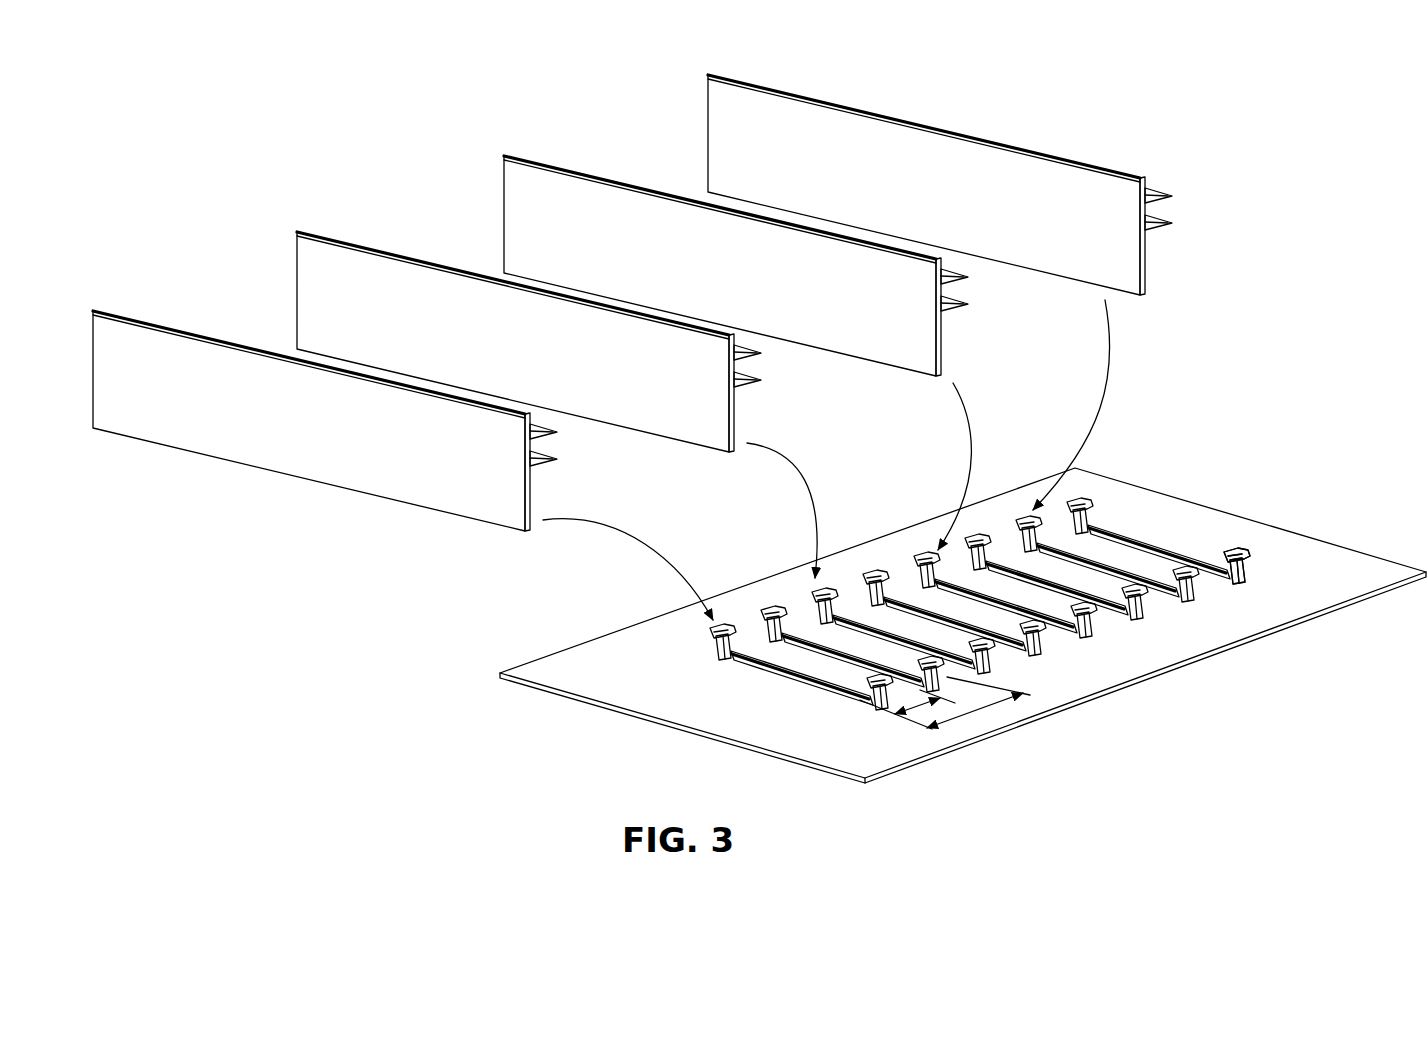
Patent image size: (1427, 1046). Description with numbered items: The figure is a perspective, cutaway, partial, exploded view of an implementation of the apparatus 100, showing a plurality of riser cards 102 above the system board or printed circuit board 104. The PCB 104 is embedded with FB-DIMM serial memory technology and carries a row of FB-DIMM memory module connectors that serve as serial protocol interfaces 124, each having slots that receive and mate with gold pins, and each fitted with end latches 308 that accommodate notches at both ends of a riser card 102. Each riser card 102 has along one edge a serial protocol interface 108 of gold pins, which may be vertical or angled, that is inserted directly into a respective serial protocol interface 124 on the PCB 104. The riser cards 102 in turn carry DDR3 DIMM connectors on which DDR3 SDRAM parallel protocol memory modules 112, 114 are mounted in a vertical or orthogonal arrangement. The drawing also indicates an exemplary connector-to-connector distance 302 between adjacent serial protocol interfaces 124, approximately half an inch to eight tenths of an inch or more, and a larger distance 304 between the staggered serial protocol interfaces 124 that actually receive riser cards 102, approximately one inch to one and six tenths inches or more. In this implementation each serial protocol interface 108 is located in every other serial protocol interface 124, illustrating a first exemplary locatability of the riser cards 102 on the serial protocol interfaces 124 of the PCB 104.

The apparatus 100 is at (322, 807).
The riser card 102 is at (995, 203).
The printed circuit board 104 is at (625, 734).
The serial protocol interface 108 is at (381, 520).
The parallel protocol memory module 112 is at (1180, 215).
The parallel protocol memory module 114 is at (1165, 172).
The serial protocol interface 124 is at (1123, 536).
The connector-to-connector distance 302 is at (920, 706).
The distance between staggered serial protocol interfaces 304 is at (1010, 697).
The end latch 308 is at (1255, 566).